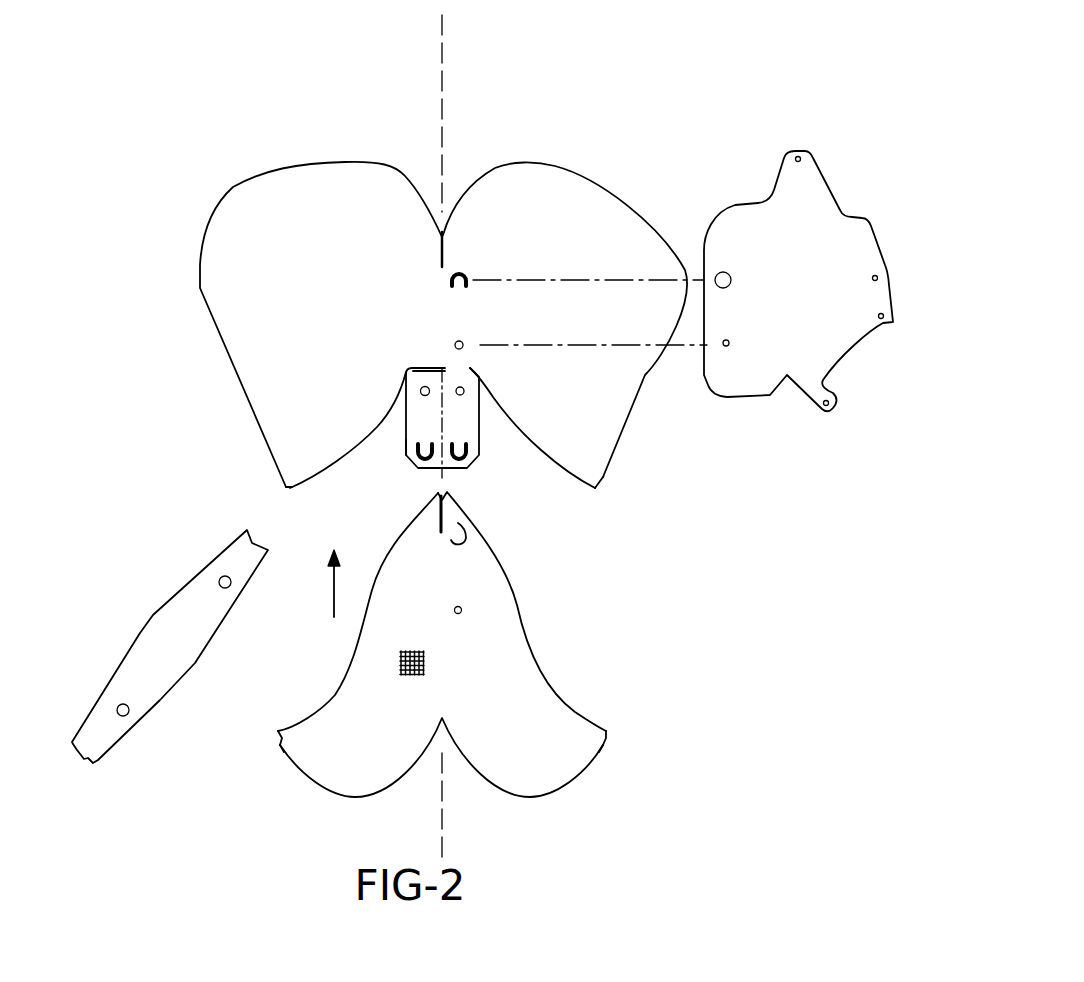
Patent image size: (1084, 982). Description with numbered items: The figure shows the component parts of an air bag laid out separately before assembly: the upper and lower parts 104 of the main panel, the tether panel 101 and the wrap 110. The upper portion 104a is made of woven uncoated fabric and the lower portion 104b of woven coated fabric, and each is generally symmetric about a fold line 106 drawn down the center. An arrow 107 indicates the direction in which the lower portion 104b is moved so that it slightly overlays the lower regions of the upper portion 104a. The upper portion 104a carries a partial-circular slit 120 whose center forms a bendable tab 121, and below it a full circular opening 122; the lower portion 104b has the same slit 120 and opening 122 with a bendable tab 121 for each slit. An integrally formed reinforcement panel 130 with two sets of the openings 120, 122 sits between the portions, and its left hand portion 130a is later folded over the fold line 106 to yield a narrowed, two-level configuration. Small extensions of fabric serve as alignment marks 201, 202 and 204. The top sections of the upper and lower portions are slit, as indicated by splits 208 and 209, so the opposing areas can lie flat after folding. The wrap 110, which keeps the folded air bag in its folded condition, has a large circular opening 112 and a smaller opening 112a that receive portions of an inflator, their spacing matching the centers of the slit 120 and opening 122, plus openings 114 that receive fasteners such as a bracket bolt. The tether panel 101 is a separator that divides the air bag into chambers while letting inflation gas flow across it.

The tether panel 101 is at (218, 562).
The upper and lower parts of the air bag 104 is at (365, 150).
The upper portion 104a is at (462, 294).
The lower portion 104b is at (447, 662).
The fold line 106 is at (440, 165).
The arrow 107 is at (330, 585).
The wrap 110 is at (806, 269).
The large circular opening 112 is at (731, 273).
The smaller opening 112a is at (730, 345).
The openings 114 is at (797, 157).
The partial-circular slit 120 is at (422, 366).
The bendable tab 121 is at (449, 279).
The full circular opening 122 is at (454, 345).
The reinforcement panel 130 is at (388, 403).
The left hand portion of the reinforcement panel 130a is at (416, 438).
The alignment mark 201 is at (282, 482).
The alignment mark 202 is at (280, 743).
The alignment mark 204 is at (278, 731).
The split 208 is at (446, 250).
The split 209 is at (442, 513).